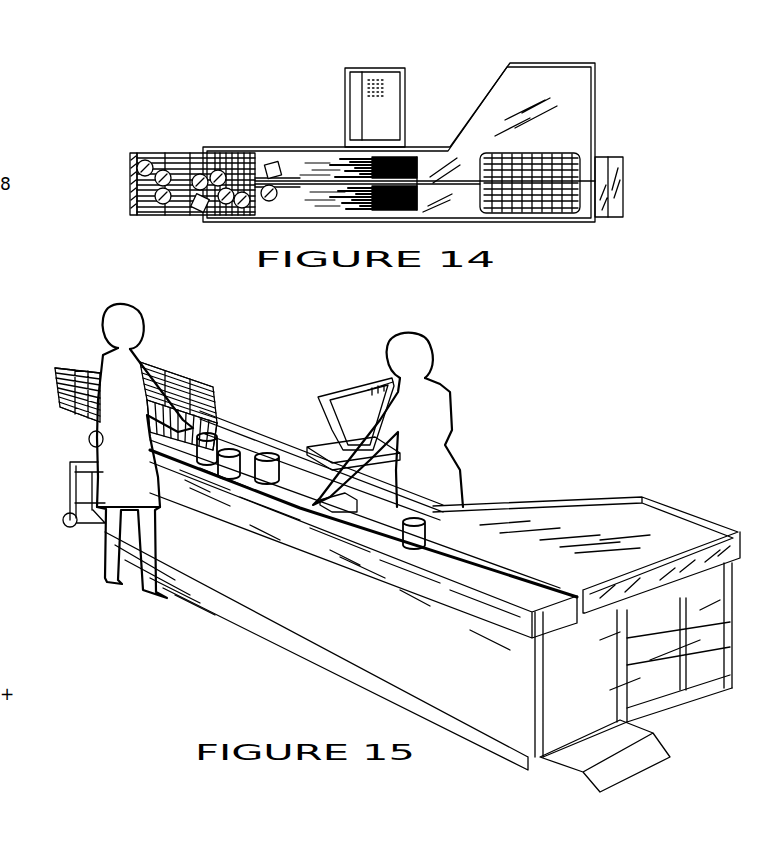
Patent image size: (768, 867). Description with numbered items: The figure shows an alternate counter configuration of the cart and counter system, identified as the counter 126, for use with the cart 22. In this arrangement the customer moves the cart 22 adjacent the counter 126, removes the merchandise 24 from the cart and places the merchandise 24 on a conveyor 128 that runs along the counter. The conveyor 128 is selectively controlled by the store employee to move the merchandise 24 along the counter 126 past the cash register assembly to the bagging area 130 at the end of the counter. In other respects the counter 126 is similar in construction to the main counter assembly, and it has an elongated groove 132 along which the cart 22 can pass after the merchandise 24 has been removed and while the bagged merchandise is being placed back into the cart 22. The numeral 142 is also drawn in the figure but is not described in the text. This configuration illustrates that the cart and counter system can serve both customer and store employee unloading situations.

In FIG. 14, the cart 22 is at (162, 151).
In FIG. 15, the cart 22 is at (86, 363).
In FIG. 14, the merchandise 24 is at (245, 155).
In FIG. 15, the merchandise 24 is at (272, 468).
In FIG. 14, the counter 126 is at (255, 228).
In FIG. 15, the counter 126 is at (271, 585).
In FIG. 14, the conveyor 128 is at (345, 200).
In FIG. 15, the conveyor 128 is at (290, 477).
In FIG. 14, the bagging area 130 is at (560, 128).
In FIG. 15, the bagging area 130 is at (603, 520).
In FIG. 14, the elongated groove 132 is at (427, 178).
In FIG. 15, the elongated groove 132 is at (470, 575).
In FIG. 15, the cart 142 is at (0, 305).